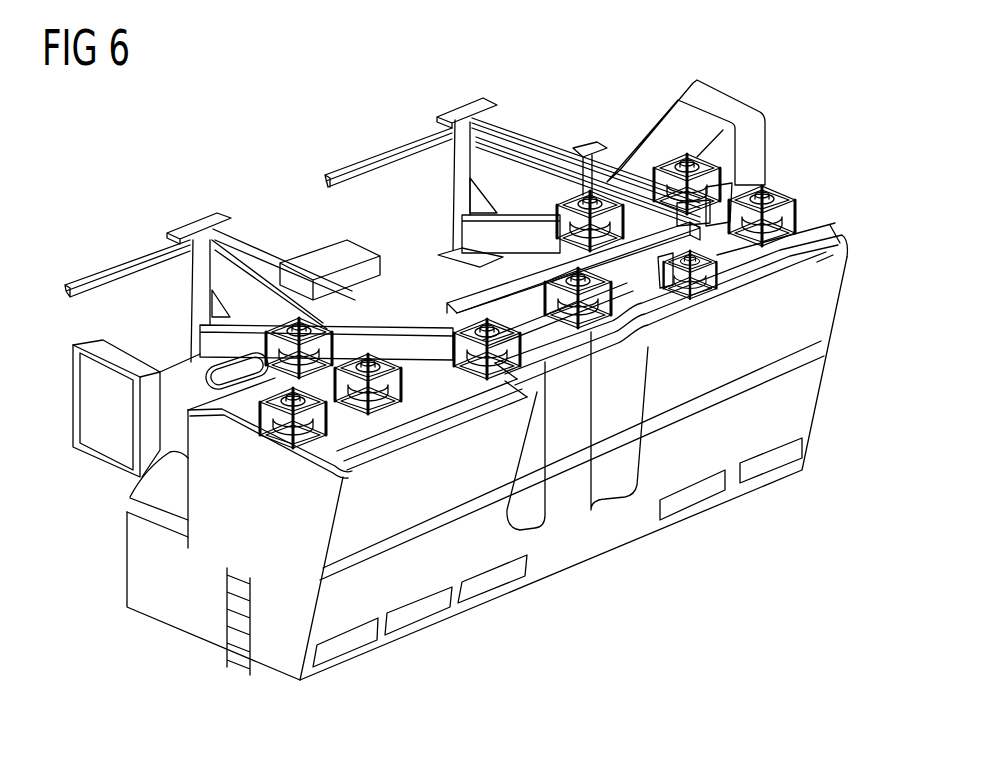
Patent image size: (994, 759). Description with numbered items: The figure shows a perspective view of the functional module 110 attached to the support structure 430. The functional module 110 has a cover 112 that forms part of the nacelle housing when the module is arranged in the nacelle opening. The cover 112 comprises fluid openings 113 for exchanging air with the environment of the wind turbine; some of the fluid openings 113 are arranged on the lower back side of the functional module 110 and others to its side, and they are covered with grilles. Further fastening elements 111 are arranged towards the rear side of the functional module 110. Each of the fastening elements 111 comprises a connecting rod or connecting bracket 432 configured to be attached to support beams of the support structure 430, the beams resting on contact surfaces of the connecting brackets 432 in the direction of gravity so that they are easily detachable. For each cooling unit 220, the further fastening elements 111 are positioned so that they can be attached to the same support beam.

The functional module 110 is at (817, 143).
The cover 112 is at (828, 303).
The fluid openings 113 is at (727, 97).
The cooling unit 220 is at (820, 407).
The support structure 430 is at (530, 100).
The connecting rod or connecting bracket 432 is at (532, 301).
The further fastening elements 111 is at (390, 365).